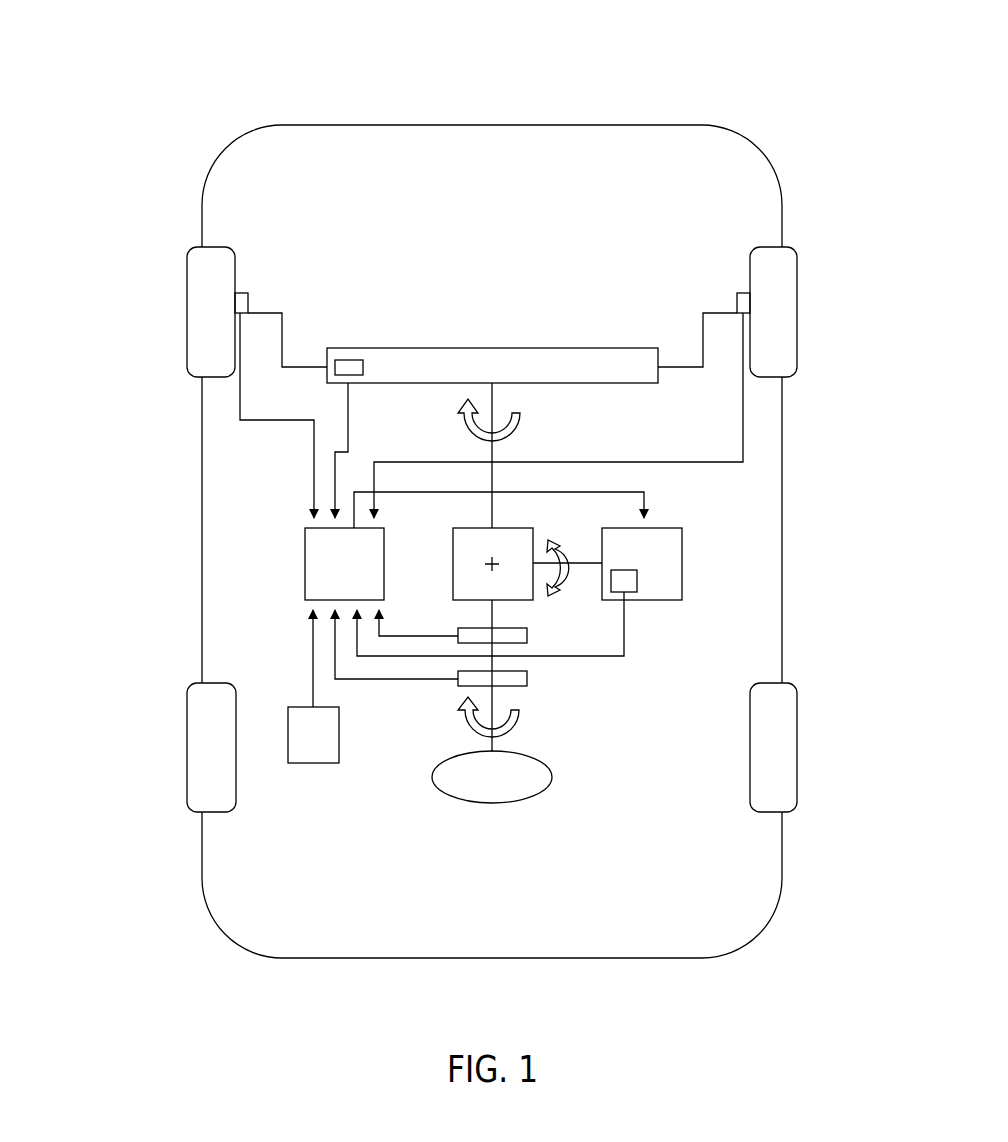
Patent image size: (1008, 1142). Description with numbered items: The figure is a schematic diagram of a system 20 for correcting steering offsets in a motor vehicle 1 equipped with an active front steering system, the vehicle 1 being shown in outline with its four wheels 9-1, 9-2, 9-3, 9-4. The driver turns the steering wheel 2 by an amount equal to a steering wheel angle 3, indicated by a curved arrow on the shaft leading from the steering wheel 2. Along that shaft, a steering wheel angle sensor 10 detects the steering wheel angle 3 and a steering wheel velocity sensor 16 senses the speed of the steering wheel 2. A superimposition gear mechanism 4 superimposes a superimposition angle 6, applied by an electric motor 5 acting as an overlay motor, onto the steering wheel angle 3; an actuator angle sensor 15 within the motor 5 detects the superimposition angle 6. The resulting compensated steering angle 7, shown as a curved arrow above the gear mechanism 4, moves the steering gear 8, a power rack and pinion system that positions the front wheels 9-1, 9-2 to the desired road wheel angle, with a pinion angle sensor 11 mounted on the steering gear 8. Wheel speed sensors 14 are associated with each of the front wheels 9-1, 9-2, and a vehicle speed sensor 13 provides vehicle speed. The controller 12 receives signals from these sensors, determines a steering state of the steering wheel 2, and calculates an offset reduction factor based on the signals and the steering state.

The system for correcting steering offsets 20 is at (148, 68).
The motor vehicle 1 is at (695, 127).
The front wheel 9-1 is at (197, 306).
The front wheel 9-2 is at (797, 306).
The wheel 9-3 is at (197, 748).
The wheel 9-4 is at (797, 748).
The wheel speed sensor 14 is at (249, 296).
The steering gear 8 is at (549, 348).
The pinion angle sensor 11 is at (350, 360).
The compensated steering angle 7 is at (522, 425).
The superimposition gear mechanism 4 is at (453, 547).
The electric motor 5 is at (682, 563).
The actuator angle sensor 15 is at (632, 583).
The superimposition angle 6 is at (562, 546).
The controller 12 is at (305, 556).
The steering wheel velocity sensor 16 is at (528, 636).
The steering wheel angle sensor 10 is at (528, 679).
The steering wheel angle 3 is at (519, 714).
The steering wheel 2 is at (553, 771).
The vehicle speed sensor 13 is at (313, 764).